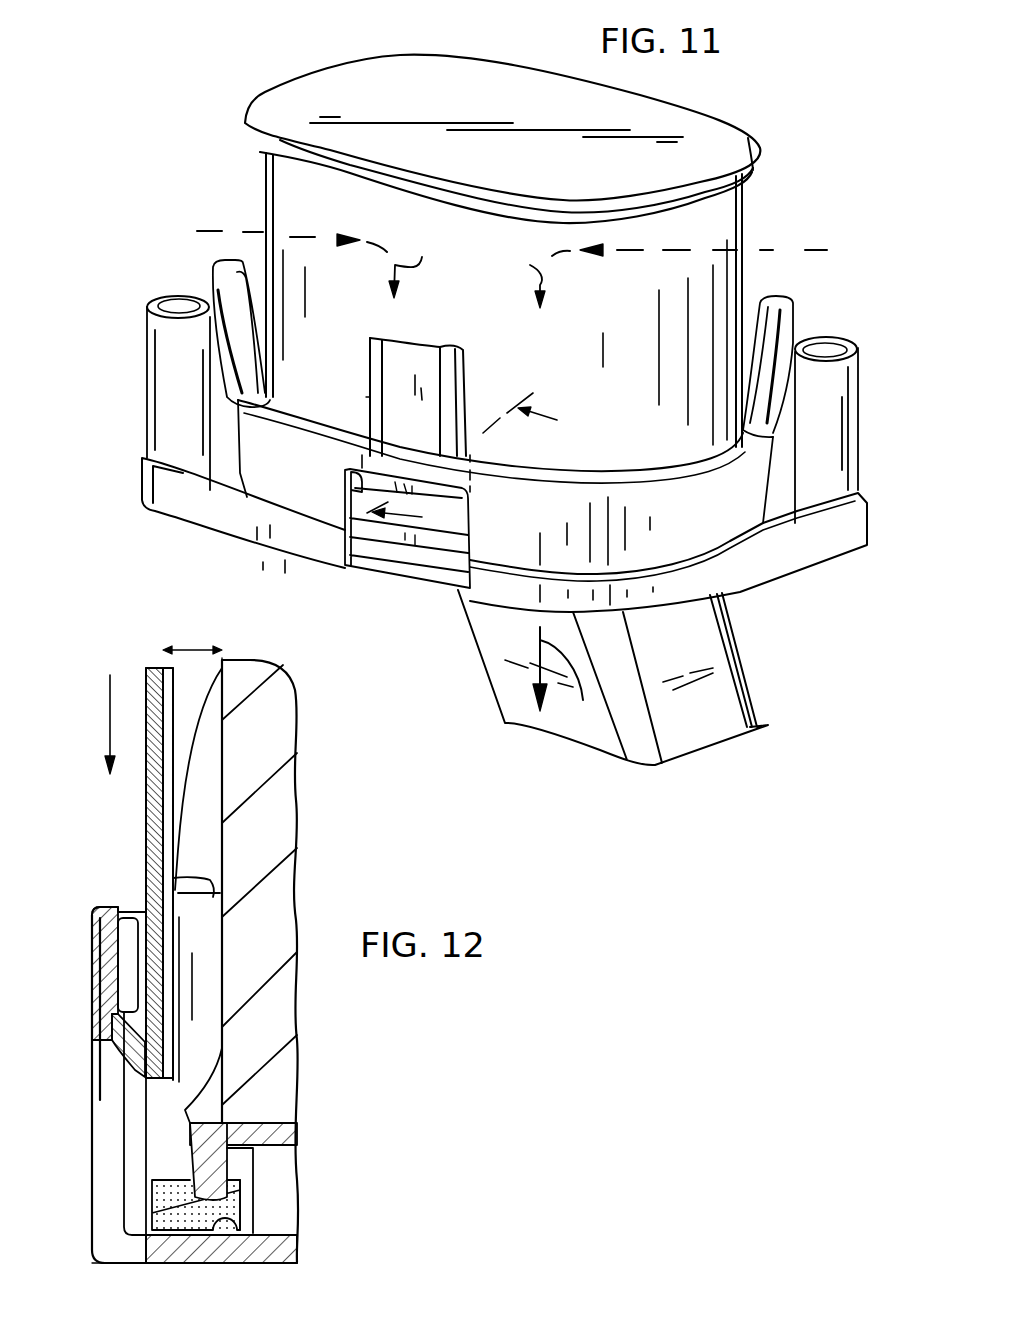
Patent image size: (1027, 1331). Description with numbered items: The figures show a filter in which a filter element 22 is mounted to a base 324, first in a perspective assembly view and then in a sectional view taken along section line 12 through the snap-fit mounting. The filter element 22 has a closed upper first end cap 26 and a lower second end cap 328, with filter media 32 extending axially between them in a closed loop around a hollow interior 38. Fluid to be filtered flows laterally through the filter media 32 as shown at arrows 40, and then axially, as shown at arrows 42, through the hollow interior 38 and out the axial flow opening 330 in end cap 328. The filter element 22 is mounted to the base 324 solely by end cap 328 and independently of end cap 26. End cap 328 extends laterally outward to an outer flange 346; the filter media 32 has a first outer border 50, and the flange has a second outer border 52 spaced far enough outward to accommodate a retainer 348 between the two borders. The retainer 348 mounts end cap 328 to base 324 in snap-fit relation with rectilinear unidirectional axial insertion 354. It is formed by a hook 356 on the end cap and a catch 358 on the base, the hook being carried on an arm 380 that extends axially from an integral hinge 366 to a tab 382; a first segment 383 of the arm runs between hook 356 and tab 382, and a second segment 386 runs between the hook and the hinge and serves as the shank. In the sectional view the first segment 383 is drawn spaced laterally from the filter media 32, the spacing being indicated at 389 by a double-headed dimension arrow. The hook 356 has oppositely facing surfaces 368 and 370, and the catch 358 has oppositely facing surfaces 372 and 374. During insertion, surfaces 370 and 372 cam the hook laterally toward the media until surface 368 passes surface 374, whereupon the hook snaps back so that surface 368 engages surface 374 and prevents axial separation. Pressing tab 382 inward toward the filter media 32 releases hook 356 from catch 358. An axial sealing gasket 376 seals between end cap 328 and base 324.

In FIG. 11, the section line 12 is at (481, 462).
In FIG. 11, the filter element 22 is at (728, 268).
In FIG. 11, the first end cap 26 is at (765, 160).
In FIG. 12, the filter media 32 is at (243, 673).
In FIG. 12, the hollow interior 38 is at (348, 829).
In FIG. 11, the lateral flow arrows 40 is at (210, 230).
In FIG. 11, the axial flow arrows 42 is at (551, 482).
In FIG. 12, the first outer border 50 is at (218, 660).
In FIG. 12, the second outer border 52 is at (95, 913).
In FIG. 11, the base 324 is at (724, 640).
In FIG. 12, the base 324 is at (281, 1258).
In FIG. 11, the second end cap 328 is at (820, 545).
In FIG. 12, the second end cap 328 is at (293, 1107).
In FIG. 12, the axial flow opening 330 is at (300, 1247).
In FIG. 12, the outer flange 346 is at (146, 1250).
In FIG. 12, the retainer 348 is at (88, 1031).
In FIG. 12, the axial insertion 354 is at (108, 713).
In FIG. 12, the hook 356 is at (124, 1045).
In FIG. 12, the catch 358 is at (97, 943).
In FIG. 12, the hinge 366 is at (208, 1098).
In FIG. 12, the hook surface 368 is at (110, 1016).
In FIG. 12, the hook camming surface 370 is at (110, 1037).
In FIG. 12, the catch camming surface 372 is at (117, 906).
In FIG. 12, the catch surface 374 is at (117, 987).
In FIG. 12, the axial sealing gasket 376 is at (235, 1208).
In FIG. 11, the arm 380 is at (436, 399).
In FIG. 12, the arm 380 is at (146, 798).
In FIG. 11, the tab 382 is at (468, 350).
In FIG. 12, the tab 382 is at (147, 670).
In FIG. 11, the first segment 383 is at (368, 397).
In FIG. 12, the first segment 383 is at (157, 847).
In FIG. 12, the second segment 386 is at (220, 1052).
In FIG. 12, the clearance width 389 is at (187, 647).